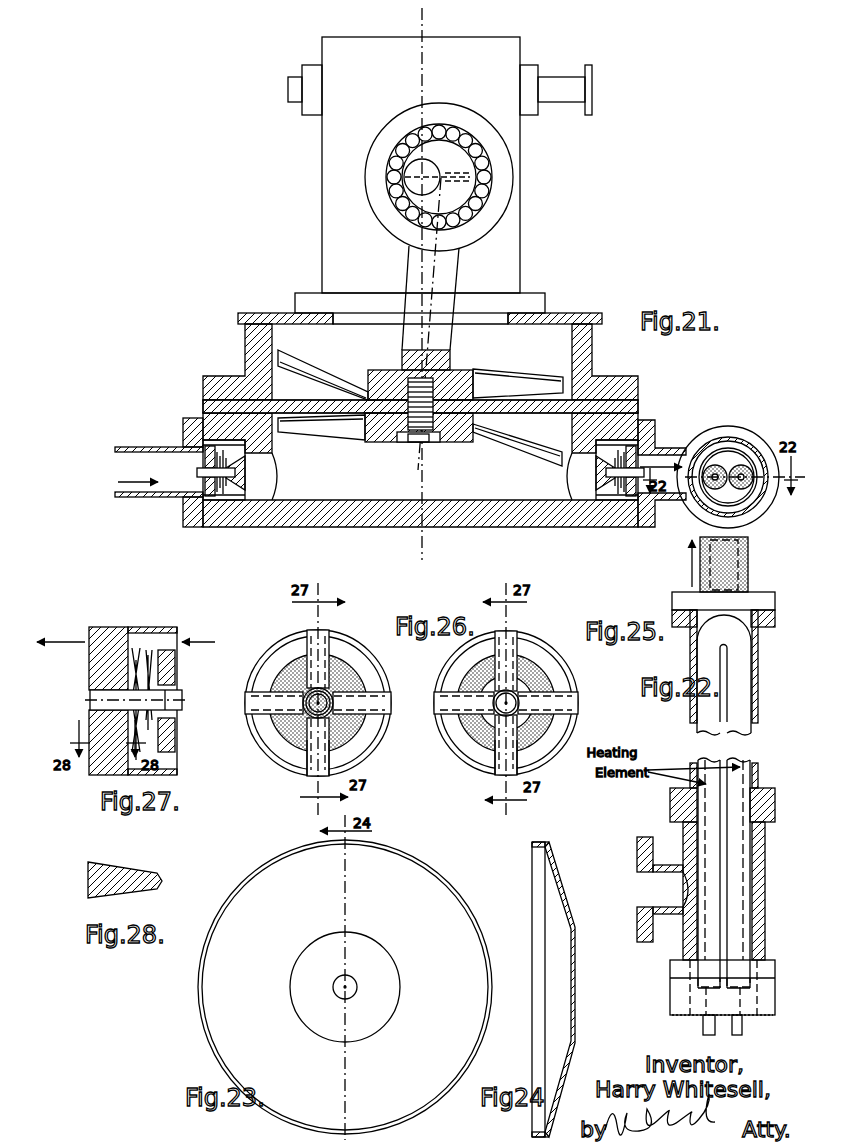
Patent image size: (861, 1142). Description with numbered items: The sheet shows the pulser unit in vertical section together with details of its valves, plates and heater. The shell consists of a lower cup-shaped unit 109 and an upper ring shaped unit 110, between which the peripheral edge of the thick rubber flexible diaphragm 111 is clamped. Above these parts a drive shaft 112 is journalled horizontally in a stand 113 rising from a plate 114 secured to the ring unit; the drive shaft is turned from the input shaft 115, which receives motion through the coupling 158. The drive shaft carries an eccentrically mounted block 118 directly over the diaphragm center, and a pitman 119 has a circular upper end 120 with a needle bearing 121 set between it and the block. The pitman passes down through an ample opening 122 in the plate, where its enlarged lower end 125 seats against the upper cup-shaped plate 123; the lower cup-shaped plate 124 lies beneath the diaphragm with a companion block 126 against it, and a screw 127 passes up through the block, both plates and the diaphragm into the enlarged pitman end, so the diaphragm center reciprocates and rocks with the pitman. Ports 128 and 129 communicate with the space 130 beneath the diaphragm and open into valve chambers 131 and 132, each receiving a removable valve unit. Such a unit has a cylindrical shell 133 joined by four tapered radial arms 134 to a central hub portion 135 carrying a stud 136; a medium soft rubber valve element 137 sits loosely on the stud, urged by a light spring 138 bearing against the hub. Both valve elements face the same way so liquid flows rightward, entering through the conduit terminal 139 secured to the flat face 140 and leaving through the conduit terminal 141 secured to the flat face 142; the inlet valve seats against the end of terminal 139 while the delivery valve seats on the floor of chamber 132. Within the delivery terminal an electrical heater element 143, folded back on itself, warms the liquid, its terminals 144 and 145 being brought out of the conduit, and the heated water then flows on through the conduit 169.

In FIG. 21, the lower cup-shaped unit 109 is at (345, 527).
In FIG. 21, the upper ring shaped unit 110 is at (243, 346).
In FIG. 21, the flexible diaphragm 111 is at (201, 408).
In FIG. 21, the drive shaft 112 is at (430, 166).
In FIG. 21, the stand 113 is at (338, 155).
In FIG. 21, the plate 114 is at (581, 313).
In FIG. 21, the input shaft 115 is at (560, 87).
In FIG. 21, the eccentrically mounted block 118 is at (455, 197).
In FIG. 21, the pitman 119 is at (445, 273).
In FIG. 21, the circular upper end of pitman 120 is at (502, 177).
In FIG. 21, the needle bearing 121 is at (493, 188).
In FIG. 21, the opening 122 is at (478, 318).
In FIG. 21, the upper cup-shaped plate 123 is at (533, 392).
In FIG. 23, the upper cup-shaped plate 123 is at (345, 987).
In FIG. 24, the upper cup-shaped plate 123 is at (552, 878).
In FIG. 21, the lower cup-shaped plate 124 is at (317, 428).
In FIG. 23, the lower cup-shaped plate 124 is at (361, 987).
In FIG. 24, the lower cup-shaped plate 124 is at (552, 882).
In FIG. 21, the enlarged lower end of pitman 125 is at (378, 372).
In FIG. 21, the companion block 126 is at (380, 433).
In FIG. 21, the screw 127 is at (428, 443).
In FIG. 21, the port 128 is at (260, 483).
In FIG. 21, the port 129 is at (580, 483).
In FIG. 21, the space beneath the diaphragm 130 is at (478, 482).
In FIG. 21, the valve chamber 131 is at (226, 505).
In FIG. 21, the valve chamber 132 is at (606, 505).
In FIG. 25, the cylindrical shell 133 is at (472, 651).
In FIG. 26, the cylindrical shell 133 is at (283, 652).
In FIG. 27, the cylindrical shell 133 is at (130, 630).
In FIG. 25, the radial arms 134 is at (498, 762).
In FIG. 26, the radial arms 134 is at (312, 762).
In FIG. 28, the radial arms 134 is at (142, 871).
In FIG. 25, the central hub portion 135 is at (480, 690).
In FIG. 26, the central hub portion 135 is at (275, 676).
In FIG. 25, the stud 136 is at (512, 698).
In FIG. 26, the stud 136 is at (322, 706).
In FIG. 27, the stud 136 is at (112, 700).
In FIG. 25, the valve element 137 is at (470, 730).
In FIG. 26, the valve element 137 is at (268, 735).
In FIG. 27, the valve element 137 is at (172, 665).
In FIG. 27, the light spring 138 is at (137, 735).
In FIG. 21, the conduit terminal 139 is at (166, 480).
In FIG. 21, the face 140 is at (183, 427).
In FIG. 21, the conduit terminal 141 is at (641, 522).
In FIG. 22, the conduit terminal 141 is at (650, 931).
In FIG. 21, the face 142 is at (655, 425).
In FIG. 21, the electrical heater element 143 is at (732, 490).
In FIG. 22, the electrical heater element 143 is at (713, 668).
In FIG. 22, the terminal 144 is at (703, 1026).
In FIG. 22, the terminal 145 is at (740, 1026).
In FIG. 21, the coupling 158 is at (592, 95).
In FIG. 22, the conduit 169 is at (736, 545).